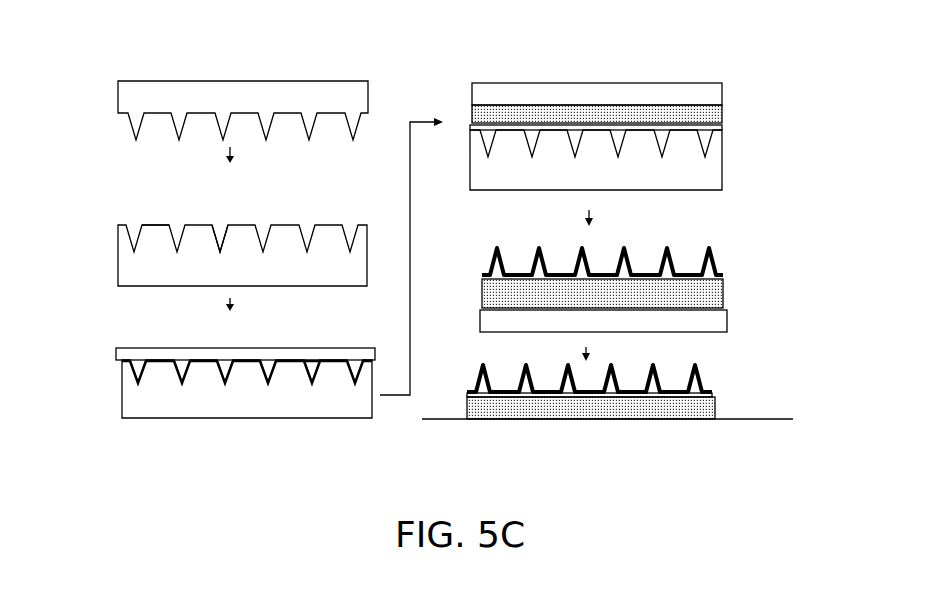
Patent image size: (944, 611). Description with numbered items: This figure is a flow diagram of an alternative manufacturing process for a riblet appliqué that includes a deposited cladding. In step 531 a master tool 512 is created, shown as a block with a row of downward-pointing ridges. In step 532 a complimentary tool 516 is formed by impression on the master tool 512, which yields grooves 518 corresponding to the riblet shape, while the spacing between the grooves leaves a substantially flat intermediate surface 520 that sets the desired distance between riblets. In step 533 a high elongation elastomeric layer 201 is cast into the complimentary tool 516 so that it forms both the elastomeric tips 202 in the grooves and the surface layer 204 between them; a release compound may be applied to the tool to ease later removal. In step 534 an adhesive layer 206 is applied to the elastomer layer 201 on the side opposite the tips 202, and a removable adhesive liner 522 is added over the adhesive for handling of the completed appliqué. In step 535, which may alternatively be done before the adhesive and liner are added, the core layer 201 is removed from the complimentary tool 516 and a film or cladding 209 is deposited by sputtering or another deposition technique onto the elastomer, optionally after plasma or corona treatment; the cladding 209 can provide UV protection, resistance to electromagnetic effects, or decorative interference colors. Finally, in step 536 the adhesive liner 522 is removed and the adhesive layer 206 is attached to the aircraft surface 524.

The elastomeric layer 201 is at (375, 353).
The elastomeric tips 202 is at (310, 368).
The surface layer 204 is at (318, 355).
The adhesive layer 206 is at (717, 112).
The cladding 209 is at (727, 275).
The master tool 512 is at (304, 76).
The complimentary tool 516 is at (291, 219).
The grooves 518 is at (163, 225).
The intermediate surface 520 is at (222, 237).
The removable adhesive liner 522 is at (695, 98).
The aircraft surface 524 is at (730, 420).
The step of creating master tool 531 is at (211, 99).
The step of creating complimentary tool 532 is at (205, 237).
The step of casting elastomeric layer 533 is at (76, 391).
The step of applying adhesive and liner 534 is at (820, 155).
The step of removing from tool and depositing cladding 535 is at (835, 292).
The step of applying to aircraft surface 536 is at (835, 402).